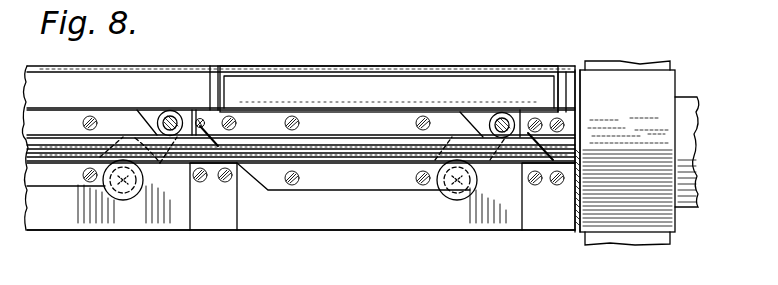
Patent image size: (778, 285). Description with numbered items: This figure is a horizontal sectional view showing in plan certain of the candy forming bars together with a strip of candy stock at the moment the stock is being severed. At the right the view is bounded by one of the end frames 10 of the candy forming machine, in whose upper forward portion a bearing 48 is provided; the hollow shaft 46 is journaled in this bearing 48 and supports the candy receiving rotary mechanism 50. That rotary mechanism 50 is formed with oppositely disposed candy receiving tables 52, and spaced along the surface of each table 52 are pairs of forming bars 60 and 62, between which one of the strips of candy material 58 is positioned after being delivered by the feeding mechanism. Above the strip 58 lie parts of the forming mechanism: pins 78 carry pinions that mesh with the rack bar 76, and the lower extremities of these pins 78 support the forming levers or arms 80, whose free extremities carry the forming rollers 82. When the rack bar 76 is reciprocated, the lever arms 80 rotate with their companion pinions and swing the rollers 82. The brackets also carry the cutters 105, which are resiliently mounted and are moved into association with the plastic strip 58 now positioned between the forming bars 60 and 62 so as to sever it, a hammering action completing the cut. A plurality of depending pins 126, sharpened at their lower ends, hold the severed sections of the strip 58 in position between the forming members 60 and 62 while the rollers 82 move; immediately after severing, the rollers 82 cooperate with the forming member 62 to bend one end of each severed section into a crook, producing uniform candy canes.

The end frame 10 is at (630, 242).
The hollow shaft 46 is at (690, 118).
The bearing 48 is at (652, 94).
The candy receiving rotary mechanism 50 is at (342, 88).
The candy receiving table 52 is at (258, 54).
The strip of candy material 58 is at (177, 150).
The forming bar 60 is at (60, 118).
The forming bar 62 is at (58, 185).
The rack bar 76 is at (459, 195).
The pin 78 is at (124, 195).
The forming lever 80 is at (150, 110).
The forming roller 82 is at (178, 106).
The cutter 105 is at (226, 172).
The depending pin 126 is at (57, 145).